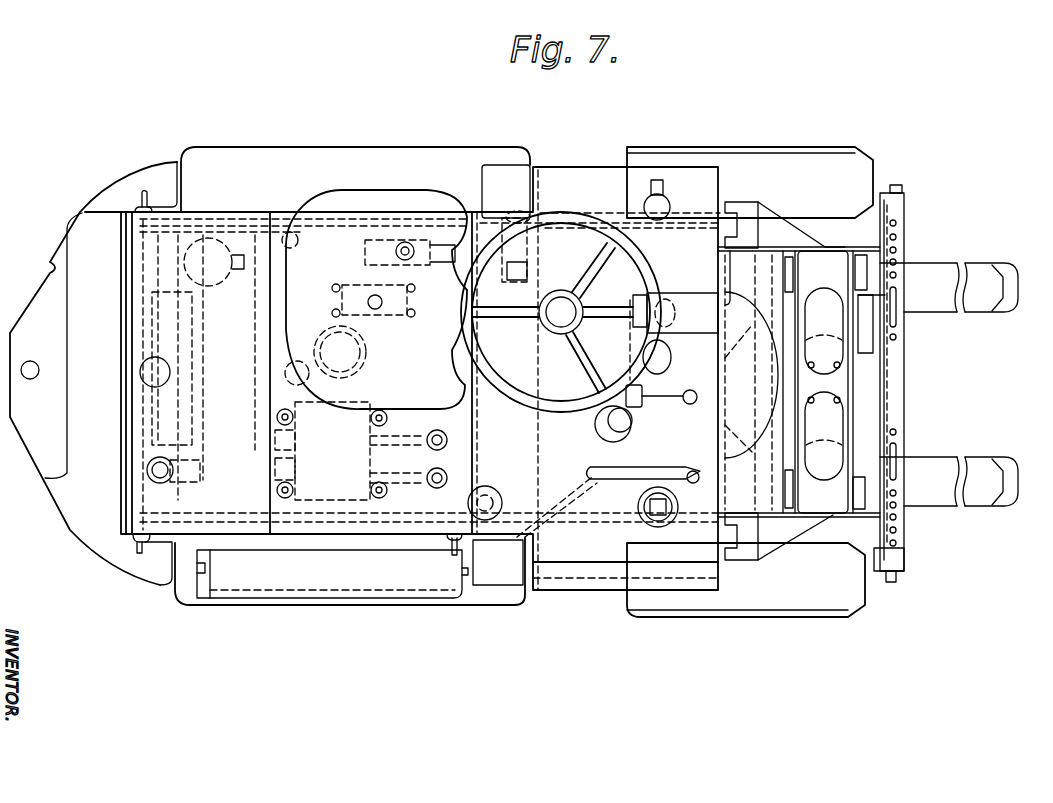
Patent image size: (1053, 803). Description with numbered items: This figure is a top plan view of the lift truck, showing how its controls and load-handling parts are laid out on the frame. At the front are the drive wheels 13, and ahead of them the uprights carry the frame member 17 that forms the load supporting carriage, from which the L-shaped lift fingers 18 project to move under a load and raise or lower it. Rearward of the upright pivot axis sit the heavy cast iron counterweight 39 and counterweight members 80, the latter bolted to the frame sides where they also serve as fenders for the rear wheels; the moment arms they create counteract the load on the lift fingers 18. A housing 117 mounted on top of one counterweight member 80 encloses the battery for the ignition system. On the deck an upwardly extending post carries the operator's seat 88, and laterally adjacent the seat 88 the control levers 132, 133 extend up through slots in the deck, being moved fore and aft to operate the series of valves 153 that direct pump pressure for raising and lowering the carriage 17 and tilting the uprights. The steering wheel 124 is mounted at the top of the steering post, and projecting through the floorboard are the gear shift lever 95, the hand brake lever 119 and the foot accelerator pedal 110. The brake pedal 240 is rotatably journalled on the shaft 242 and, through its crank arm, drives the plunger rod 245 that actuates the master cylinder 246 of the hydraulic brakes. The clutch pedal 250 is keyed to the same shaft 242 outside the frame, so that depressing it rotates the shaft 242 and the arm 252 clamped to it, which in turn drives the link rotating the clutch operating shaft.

The front drive wheels 13 is at (817, 160).
The frame member 17 is at (893, 558).
The L-shaped lift fingers 18 is at (935, 305).
The counterweight 39 is at (133, 570).
The counterweight members 80 is at (227, 158).
The seat 88 is at (353, 200).
The gear shift lever 95 is at (620, 430).
The foot accelerator pedal 110 is at (692, 403).
The housing 117 is at (286, 578).
The hand brake lever 119 is at (636, 474).
The steering wheel 124 is at (561, 271).
The control lever 132 is at (447, 477).
The control lever 133 is at (447, 440).
The series of valves 153 is at (372, 507).
The brake pedal 240 is at (715, 378).
The shaft 242 is at (512, 210).
The plunger rod 245 is at (512, 280).
The master cylinder 246 is at (452, 263).
The clutch pedal 250 is at (662, 192).
The arm 252 is at (565, 290).